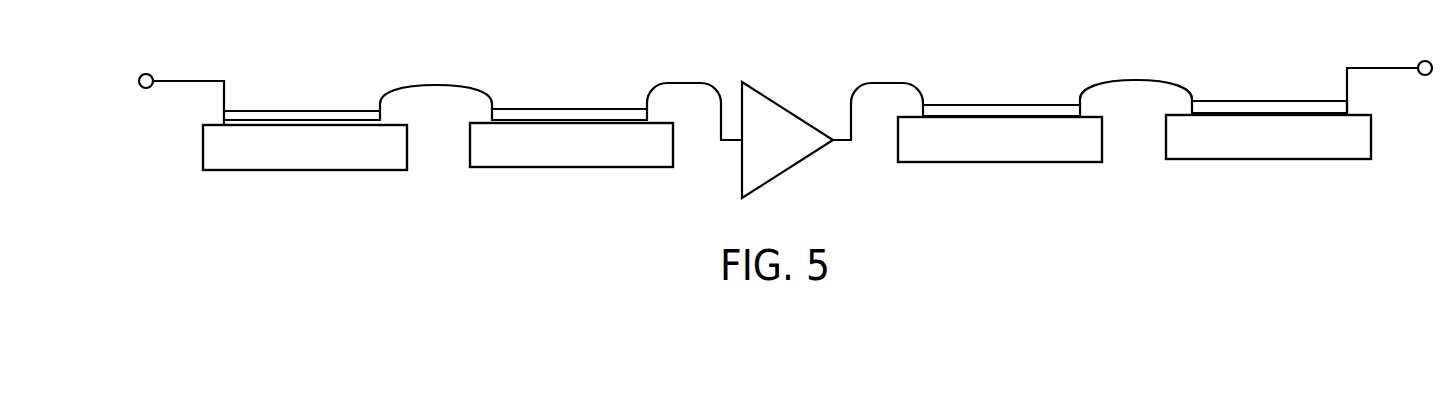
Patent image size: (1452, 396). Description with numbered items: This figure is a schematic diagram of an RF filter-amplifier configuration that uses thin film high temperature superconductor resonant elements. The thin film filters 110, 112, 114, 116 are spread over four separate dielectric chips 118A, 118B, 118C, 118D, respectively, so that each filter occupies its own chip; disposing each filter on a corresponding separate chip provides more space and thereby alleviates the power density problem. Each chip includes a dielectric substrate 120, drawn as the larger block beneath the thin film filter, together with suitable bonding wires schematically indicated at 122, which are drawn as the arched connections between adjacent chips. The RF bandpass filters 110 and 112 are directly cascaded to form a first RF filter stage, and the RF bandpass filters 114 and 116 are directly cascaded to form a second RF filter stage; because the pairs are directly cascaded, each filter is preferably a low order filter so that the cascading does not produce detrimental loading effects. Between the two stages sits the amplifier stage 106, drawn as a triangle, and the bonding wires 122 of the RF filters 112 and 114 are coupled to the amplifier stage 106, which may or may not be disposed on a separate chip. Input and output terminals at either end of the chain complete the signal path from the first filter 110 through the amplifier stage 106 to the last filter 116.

The amplifier stage 106 is at (778, 102).
The RF bandpass filter 110 is at (298, 110).
The RF bandpass filter 112 is at (567, 108).
The RF bandpass filter 114 is at (1013, 103).
The RF bandpass filter 116 is at (1230, 100).
The dielectric chip 118A is at (317, 170).
The dielectric chip 118B is at (570, 167).
The dielectric chip 118C is at (1050, 163).
The dielectric chip 118D is at (1277, 160).
The dielectric substrate 120 is at (203, 147).
The bonding wires 122 is at (430, 83).